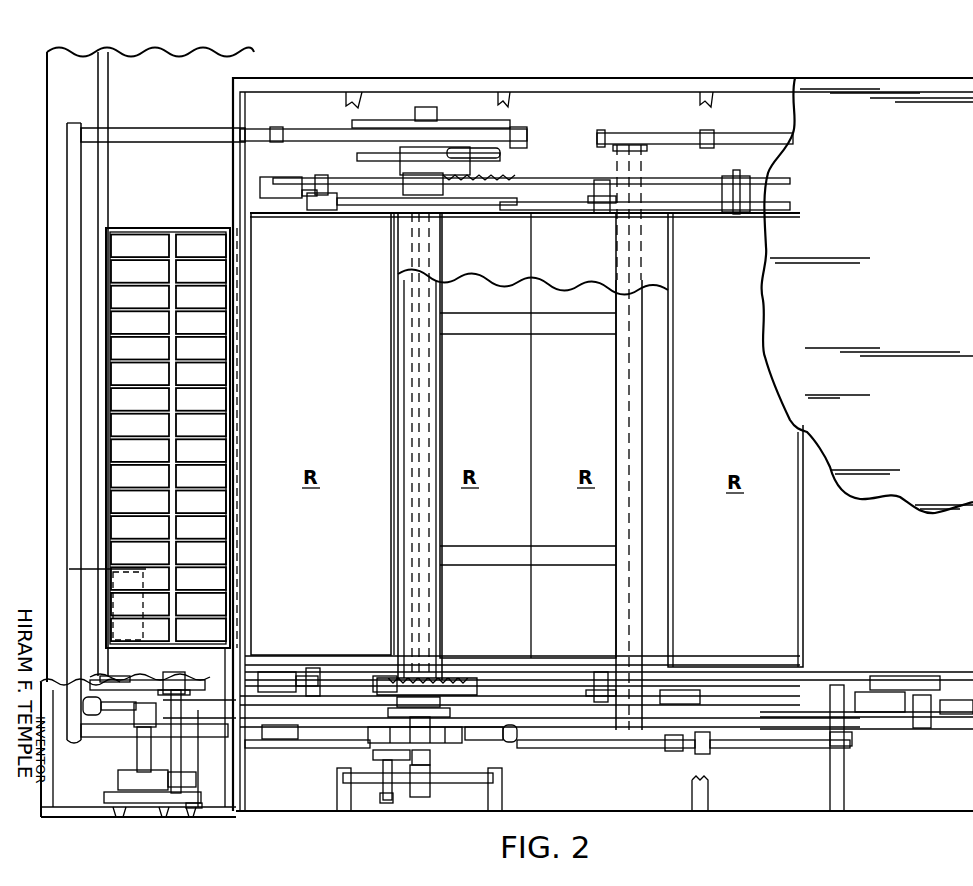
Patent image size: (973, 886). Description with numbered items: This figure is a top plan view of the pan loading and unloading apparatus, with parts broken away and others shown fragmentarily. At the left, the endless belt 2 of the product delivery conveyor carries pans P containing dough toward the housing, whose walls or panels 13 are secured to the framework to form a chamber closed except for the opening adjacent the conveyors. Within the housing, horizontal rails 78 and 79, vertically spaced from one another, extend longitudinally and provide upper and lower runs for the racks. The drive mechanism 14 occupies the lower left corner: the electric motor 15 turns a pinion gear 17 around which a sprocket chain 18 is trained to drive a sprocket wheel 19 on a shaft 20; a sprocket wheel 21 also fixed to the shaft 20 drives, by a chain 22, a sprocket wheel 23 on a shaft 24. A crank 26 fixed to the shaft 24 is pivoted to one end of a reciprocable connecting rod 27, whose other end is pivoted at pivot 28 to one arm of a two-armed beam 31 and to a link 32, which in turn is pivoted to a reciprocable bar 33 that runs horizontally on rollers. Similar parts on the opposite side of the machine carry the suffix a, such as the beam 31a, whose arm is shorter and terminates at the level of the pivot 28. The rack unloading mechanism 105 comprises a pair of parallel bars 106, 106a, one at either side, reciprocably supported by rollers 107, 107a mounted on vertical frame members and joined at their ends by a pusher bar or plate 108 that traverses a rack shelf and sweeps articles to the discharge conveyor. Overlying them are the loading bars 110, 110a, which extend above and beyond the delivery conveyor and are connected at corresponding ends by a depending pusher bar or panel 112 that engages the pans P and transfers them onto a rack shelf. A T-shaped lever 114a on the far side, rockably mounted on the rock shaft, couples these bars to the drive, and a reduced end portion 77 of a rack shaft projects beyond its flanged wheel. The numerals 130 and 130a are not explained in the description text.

The pusher bar or panel 112 is at (72, 431).
The drive mechanism 14 is at (89, 752).
The bar 110a is at (163, 130).
The pan P is at (144, 223).
The endless belt 2 is at (171, 185).
The electric motor 15 is at (89, 569).
The T-shaped lever 114a is at (492, 122).
The roller 107a is at (715, 134).
The two-armed beam 31a is at (506, 157).
The bar 106a is at (730, 142).
The upper drive block 130a is at (294, 175).
The reduced end portion 77 is at (322, 178).
The horizontal rail 78 is at (357, 206).
The pusher bar or plate 108 is at (398, 438).
The wall or panel 13 is at (900, 302).
The horizontal rail 79 is at (546, 670).
The link 32 is at (500, 695).
The lower drive block 130 is at (272, 663).
The pivot 28 is at (368, 668).
The two-armed beam 31 is at (510, 714).
The reciprocable bar 33 is at (580, 691).
The bar 110 is at (252, 738).
The rack unloading mechanism 105 is at (583, 752).
The roller 107 is at (700, 730).
The bar 106 is at (739, 742).
The pinion gear 17 is at (122, 670).
The sprocket chain 18 is at (155, 672).
The sprocket wheel 19 is at (186, 672).
The crank 26 is at (95, 716).
The connecting rod 27 is at (126, 730).
The shaft 20 is at (178, 750).
The shaft 24 is at (141, 807).
The sprocket wheel 23 is at (106, 806).
The chain 22 is at (176, 804).
The sprocket wheel 21 is at (193, 810).